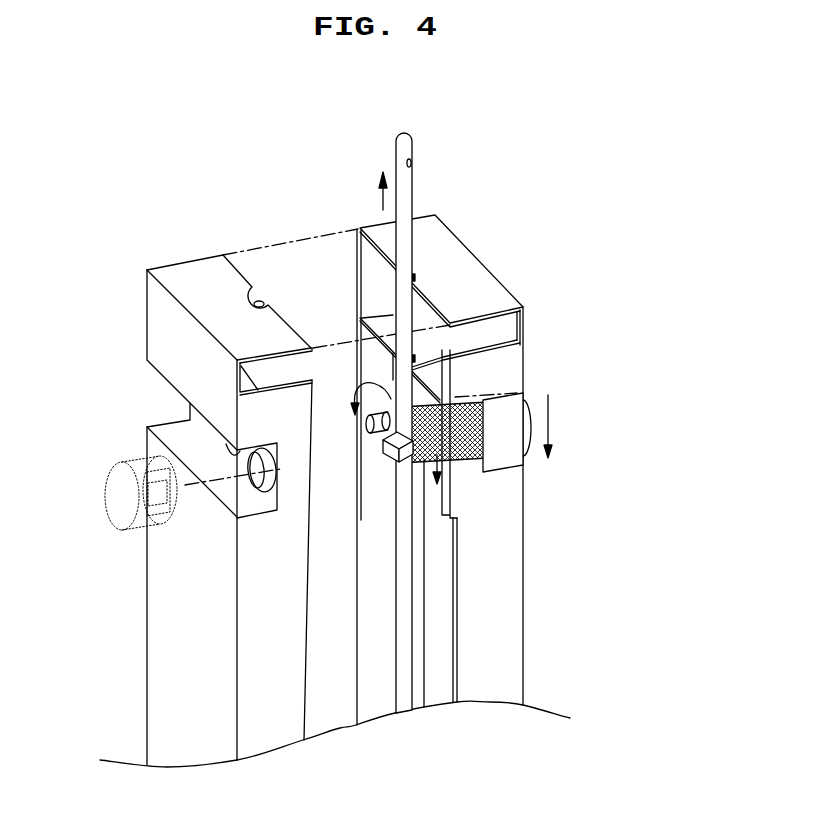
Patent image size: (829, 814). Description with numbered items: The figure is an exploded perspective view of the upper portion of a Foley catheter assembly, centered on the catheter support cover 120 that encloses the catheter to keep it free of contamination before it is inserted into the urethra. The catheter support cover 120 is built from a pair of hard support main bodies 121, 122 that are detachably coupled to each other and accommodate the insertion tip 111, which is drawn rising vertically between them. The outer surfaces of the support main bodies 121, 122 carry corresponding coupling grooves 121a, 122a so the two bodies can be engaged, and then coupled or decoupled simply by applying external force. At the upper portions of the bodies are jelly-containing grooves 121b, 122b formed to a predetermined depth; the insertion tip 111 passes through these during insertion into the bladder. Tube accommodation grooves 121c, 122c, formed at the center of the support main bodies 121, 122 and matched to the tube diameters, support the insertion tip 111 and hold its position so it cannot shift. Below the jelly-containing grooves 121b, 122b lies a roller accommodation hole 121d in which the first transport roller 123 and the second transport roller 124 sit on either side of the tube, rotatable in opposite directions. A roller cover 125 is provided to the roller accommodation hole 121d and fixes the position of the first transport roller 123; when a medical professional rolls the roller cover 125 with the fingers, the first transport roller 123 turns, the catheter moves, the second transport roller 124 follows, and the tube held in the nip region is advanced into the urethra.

The insertion tip 111 is at (407, 150).
The catheter support cover 120 is at (374, 439).
The support main body 121 is at (186, 478).
The coupling groove 121a is at (303, 640).
The jelly-containing groove 121b is at (267, 373).
The tube accommodation groove 121c is at (262, 297).
The roller accommodation hole 121d is at (256, 473).
The support main body 122 is at (484, 453).
The coupling groove 122a is at (453, 622).
The jelly-containing groove 122b is at (497, 332).
The tube accommodation groove 122c is at (412, 277).
The first transport roller 123 is at (423, 427).
The second transport roller 124 is at (390, 408).
The roller cover 125 is at (118, 505).